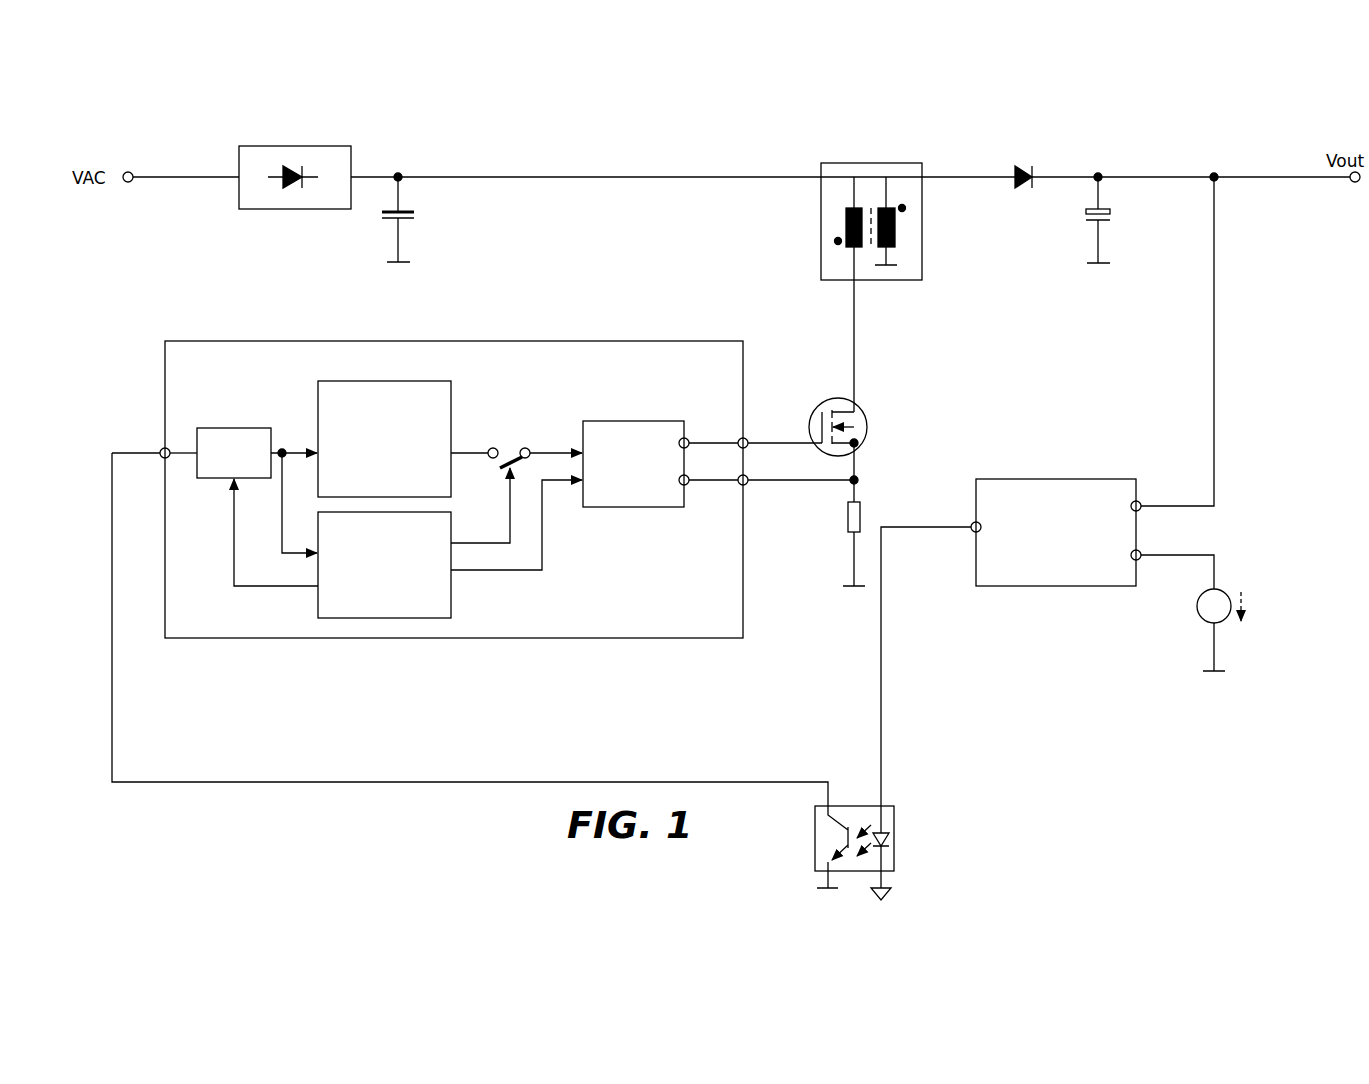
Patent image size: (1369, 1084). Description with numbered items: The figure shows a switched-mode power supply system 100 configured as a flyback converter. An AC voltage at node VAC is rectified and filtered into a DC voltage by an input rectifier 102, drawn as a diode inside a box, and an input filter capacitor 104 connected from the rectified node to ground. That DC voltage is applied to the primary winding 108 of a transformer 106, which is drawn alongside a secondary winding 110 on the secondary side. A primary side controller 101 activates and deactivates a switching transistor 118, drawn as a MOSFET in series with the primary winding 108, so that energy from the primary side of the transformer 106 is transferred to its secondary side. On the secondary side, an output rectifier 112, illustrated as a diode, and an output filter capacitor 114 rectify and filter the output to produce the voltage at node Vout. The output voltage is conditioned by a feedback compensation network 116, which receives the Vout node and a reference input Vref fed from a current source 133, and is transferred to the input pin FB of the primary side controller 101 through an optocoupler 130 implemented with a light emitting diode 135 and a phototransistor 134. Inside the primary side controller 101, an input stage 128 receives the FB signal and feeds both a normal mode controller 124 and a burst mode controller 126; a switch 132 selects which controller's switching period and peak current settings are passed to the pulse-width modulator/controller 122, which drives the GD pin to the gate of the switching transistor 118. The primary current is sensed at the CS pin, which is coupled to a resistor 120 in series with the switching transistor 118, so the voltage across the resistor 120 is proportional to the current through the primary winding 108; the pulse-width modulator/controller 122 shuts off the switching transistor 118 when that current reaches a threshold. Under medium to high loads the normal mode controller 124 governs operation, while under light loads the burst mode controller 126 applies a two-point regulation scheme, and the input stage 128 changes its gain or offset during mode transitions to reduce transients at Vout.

The switched-mode power supply system 100 is at (200, 128).
The primary side controller 101 is at (362, 341).
The input rectifier 102 is at (310, 145).
The input filter capacitor 104 is at (411, 221).
The transformer 106 is at (838, 162).
The primary winding 108 is at (846, 218).
The secondary winding 110 is at (893, 239).
The output rectifier 112 is at (1014, 170).
The output filter capacitor 114 is at (1112, 209).
The feedback compensation network 116 is at (1014, 479).
The switching transistor 118 is at (862, 408).
The resistor 120 is at (865, 508).
The pulse-width modulator/controller 122 is at (628, 421).
The normal mode controller 124 is at (318, 397).
The burst mode controller 126 is at (452, 523).
The input stage 128 is at (237, 428).
The optocoupler 130 is at (833, 806).
The switch 132 is at (516, 462).
The current source 133 is at (1228, 592).
The phototransistor 134 is at (838, 840).
The light emitting diode 135 is at (888, 834).